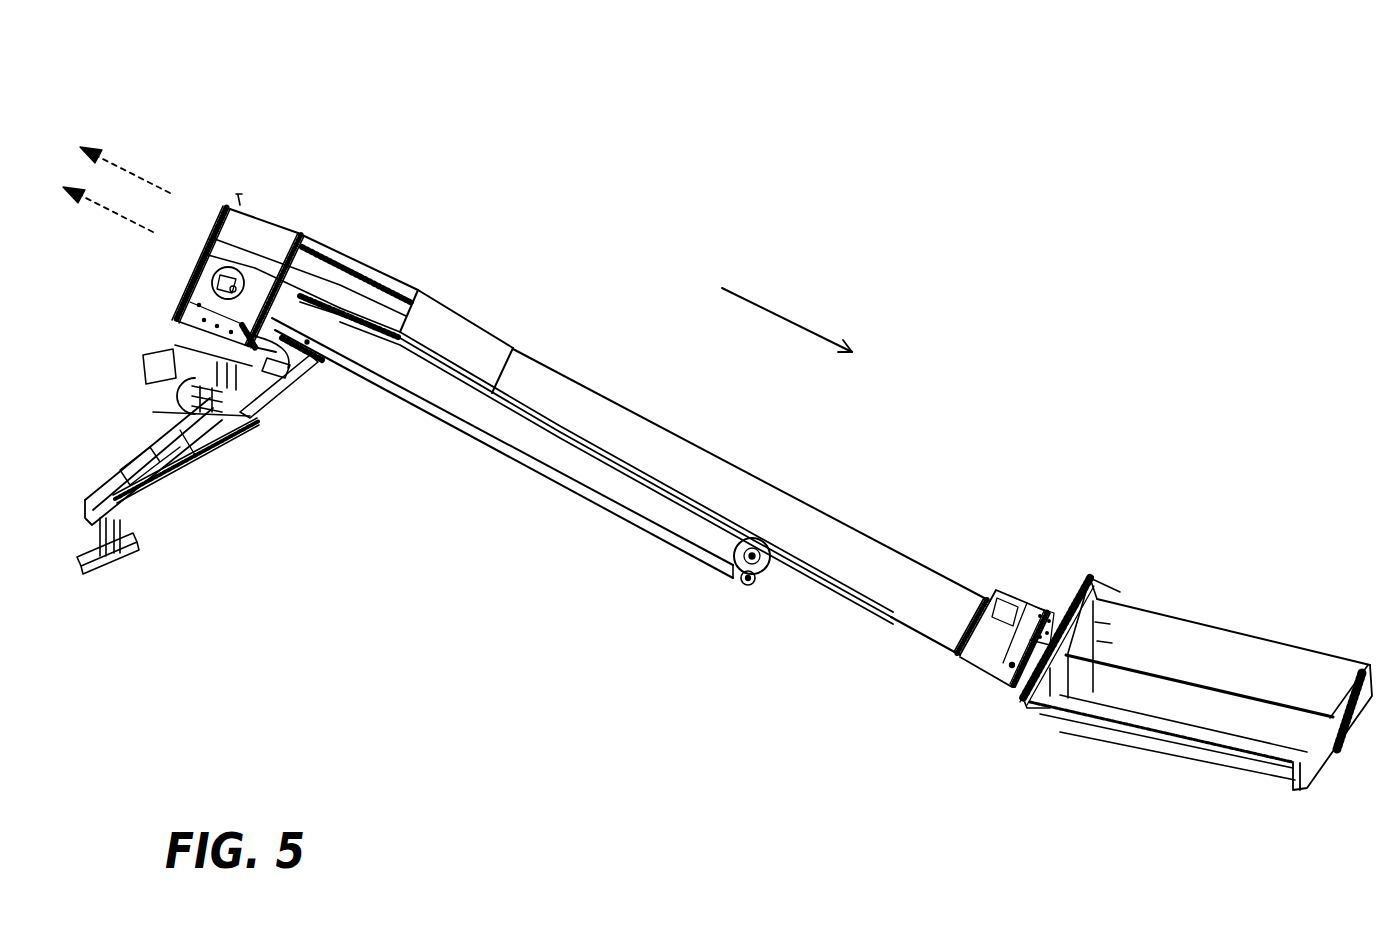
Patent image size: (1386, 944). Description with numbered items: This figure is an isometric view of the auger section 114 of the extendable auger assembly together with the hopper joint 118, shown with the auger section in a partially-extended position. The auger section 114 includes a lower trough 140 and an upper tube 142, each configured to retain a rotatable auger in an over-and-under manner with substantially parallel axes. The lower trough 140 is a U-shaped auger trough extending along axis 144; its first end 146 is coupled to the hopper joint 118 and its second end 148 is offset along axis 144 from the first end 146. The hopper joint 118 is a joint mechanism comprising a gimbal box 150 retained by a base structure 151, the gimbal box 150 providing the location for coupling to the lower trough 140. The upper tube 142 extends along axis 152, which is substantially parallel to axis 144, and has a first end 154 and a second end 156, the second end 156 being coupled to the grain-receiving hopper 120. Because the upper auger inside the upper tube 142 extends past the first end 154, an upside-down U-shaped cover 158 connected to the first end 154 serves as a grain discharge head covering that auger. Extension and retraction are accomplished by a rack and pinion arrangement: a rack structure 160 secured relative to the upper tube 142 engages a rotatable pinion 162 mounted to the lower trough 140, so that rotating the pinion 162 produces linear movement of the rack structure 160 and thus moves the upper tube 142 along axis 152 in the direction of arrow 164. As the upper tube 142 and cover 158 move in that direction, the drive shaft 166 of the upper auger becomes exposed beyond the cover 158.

The auger section 114 is at (828, 207).
The hopper joint 118 is at (279, 165).
The grain-receiving hopper 120 is at (1188, 648).
The lower trough 140 is at (493, 420).
The upper tube 142 is at (760, 500).
The axis 144 is at (101, 207).
The first end 146 is at (277, 366).
The second end 148 is at (716, 580).
The gimbal box 150 is at (205, 301).
The base structure 151 is at (155, 493).
The axis 152 is at (121, 165).
The first end 154 is at (527, 337).
The second end 156 is at (983, 578).
The cover 158 is at (449, 333).
The rack structure 160 is at (845, 597).
The pinion 162 is at (767, 574).
The arrow 164 is at (800, 325).
The drive shaft 166 is at (358, 270).